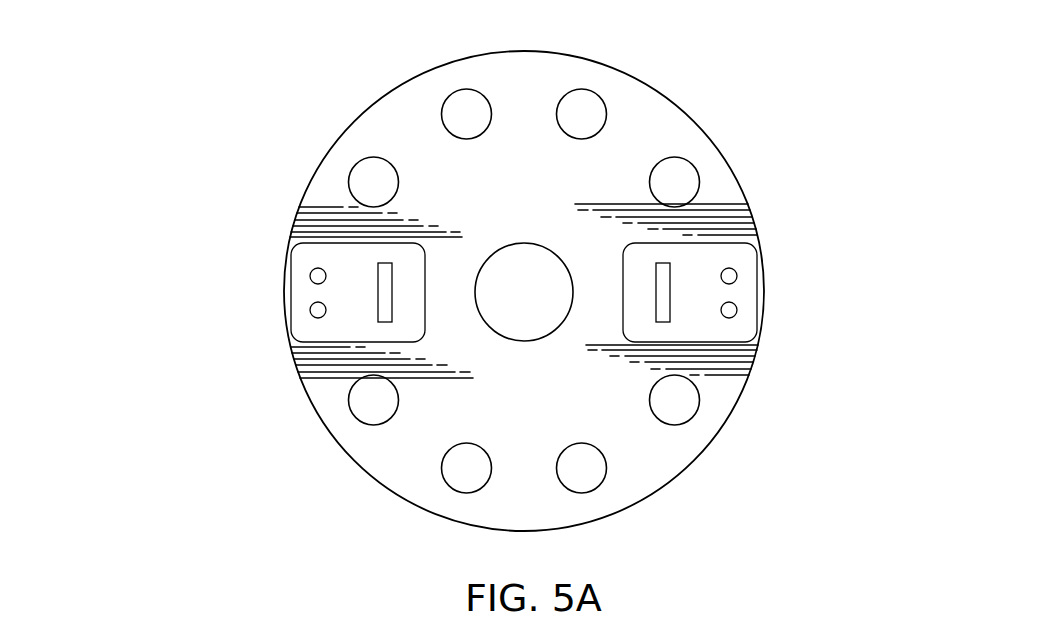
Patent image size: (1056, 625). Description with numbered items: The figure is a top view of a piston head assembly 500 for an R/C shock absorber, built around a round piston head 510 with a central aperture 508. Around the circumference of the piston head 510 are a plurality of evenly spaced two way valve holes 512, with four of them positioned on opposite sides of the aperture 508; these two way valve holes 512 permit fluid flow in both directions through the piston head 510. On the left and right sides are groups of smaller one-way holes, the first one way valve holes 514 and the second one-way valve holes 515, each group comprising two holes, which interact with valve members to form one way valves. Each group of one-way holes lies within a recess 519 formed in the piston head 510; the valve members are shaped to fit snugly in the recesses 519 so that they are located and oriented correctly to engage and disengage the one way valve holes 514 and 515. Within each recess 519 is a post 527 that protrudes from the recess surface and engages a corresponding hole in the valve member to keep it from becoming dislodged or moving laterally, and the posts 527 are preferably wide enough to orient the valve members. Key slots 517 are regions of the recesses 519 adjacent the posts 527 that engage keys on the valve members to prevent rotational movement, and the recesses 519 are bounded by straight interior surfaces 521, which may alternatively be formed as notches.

The piston head assembly 500 is at (905, 185).
The piston head 510 is at (740, 131).
The aperture 508 is at (513, 256).
The two way valve holes 512 is at (370, 167).
The first one way valve holes 514 is at (736, 308).
The second one-way valve holes 515 is at (318, 308).
The key slots 517 is at (387, 253).
The recesses 519 is at (351, 259).
The straight interior surfaces 521 is at (324, 343).
The post 527 is at (383, 287).